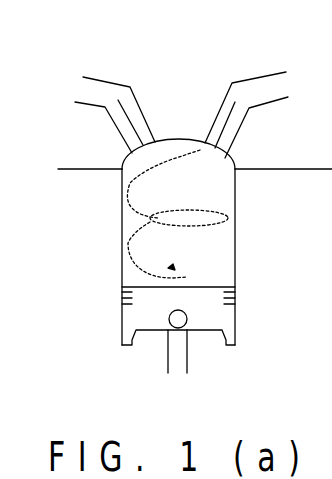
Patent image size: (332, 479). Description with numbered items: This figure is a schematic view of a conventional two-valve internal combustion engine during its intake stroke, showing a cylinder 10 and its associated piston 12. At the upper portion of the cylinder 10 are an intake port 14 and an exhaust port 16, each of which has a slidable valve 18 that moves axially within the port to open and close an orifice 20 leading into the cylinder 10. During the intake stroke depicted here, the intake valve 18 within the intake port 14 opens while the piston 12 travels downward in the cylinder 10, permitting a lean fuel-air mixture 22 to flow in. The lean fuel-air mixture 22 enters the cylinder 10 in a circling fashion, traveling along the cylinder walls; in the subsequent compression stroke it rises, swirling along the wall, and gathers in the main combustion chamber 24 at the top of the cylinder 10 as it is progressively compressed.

The cylinder 10 is at (311, 220).
The piston 12 is at (155, 317).
The intake port 14 is at (266, 83).
The exhaust port 16 is at (102, 92).
The slidable valve 18 is at (127, 110).
The orifice 20 is at (233, 152).
The lean fuel-air mixture 22 is at (122, 248).
The main combustion chamber 24 is at (222, 260).